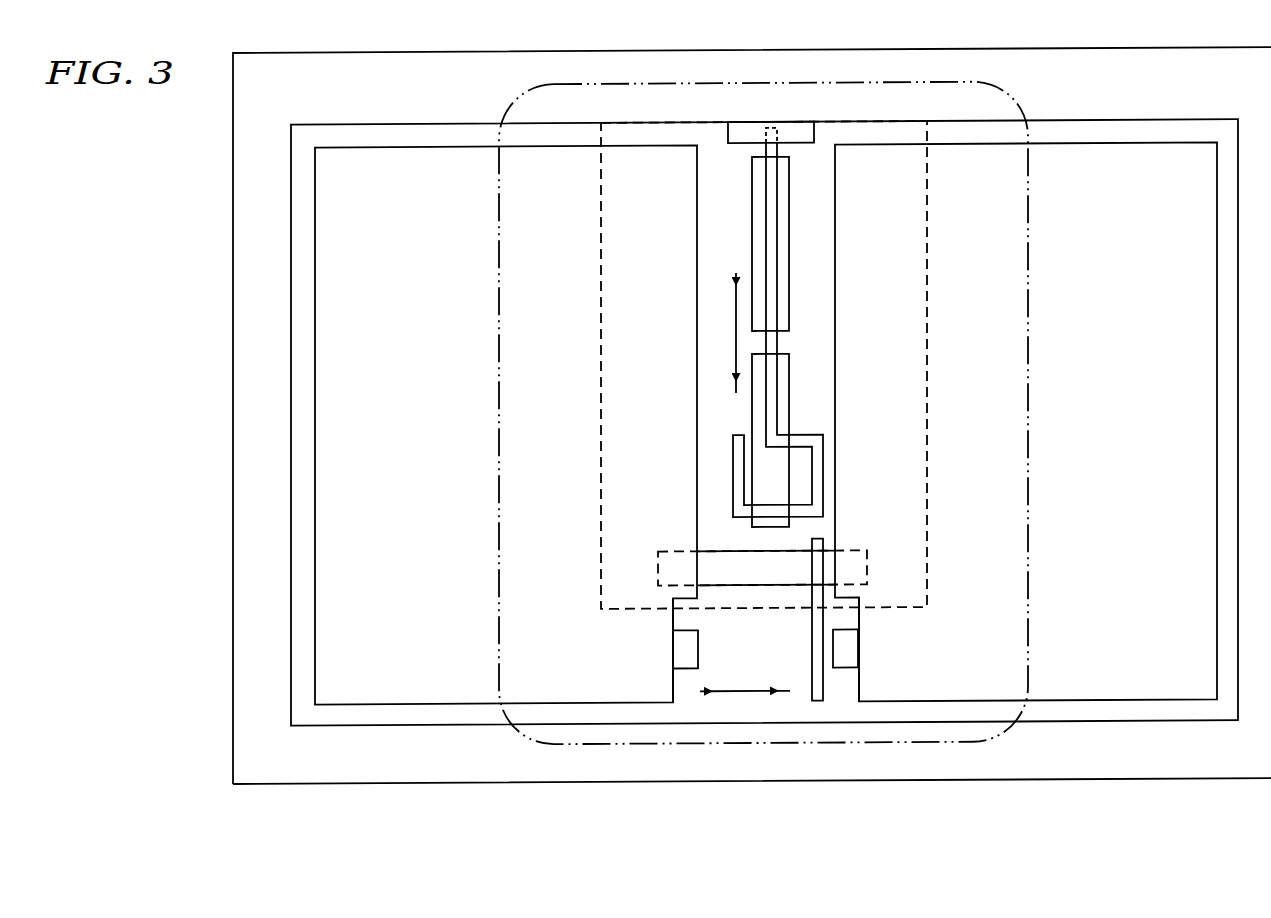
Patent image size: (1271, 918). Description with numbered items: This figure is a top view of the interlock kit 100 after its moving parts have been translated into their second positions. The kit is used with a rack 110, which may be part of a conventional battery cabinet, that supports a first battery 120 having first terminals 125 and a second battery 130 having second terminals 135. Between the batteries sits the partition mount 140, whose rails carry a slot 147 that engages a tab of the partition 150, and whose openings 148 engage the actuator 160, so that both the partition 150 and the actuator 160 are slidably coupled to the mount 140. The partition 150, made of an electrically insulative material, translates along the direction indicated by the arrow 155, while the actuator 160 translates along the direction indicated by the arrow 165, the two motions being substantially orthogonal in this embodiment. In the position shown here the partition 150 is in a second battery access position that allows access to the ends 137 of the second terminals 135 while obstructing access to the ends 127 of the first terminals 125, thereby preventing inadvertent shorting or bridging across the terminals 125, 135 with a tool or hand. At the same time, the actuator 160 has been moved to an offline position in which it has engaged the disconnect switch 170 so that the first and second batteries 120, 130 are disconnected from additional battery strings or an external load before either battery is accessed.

The interlock kit 100 is at (498, 344).
The rack 110 is at (284, 97).
The first battery 120 is at (1188, 192).
The first terminals 125 is at (858, 668).
The ends of the first terminals 127 is at (846, 654).
The second battery 130 is at (373, 192).
The second terminals 135 is at (673, 667).
The ends of the second terminals 137 is at (684, 653).
The partition mount 140 is at (601, 323).
The slot 147 is at (678, 550).
The openings 148 is at (789, 253).
The partition 150 is at (817, 705).
The arrow 155 is at (752, 690).
The actuator 160 is at (824, 475).
The arrow 165 is at (735, 336).
The disconnect switch 170 is at (815, 135).